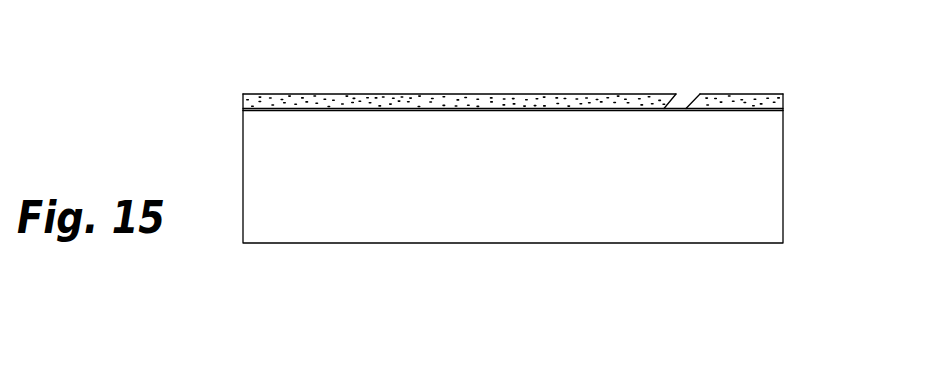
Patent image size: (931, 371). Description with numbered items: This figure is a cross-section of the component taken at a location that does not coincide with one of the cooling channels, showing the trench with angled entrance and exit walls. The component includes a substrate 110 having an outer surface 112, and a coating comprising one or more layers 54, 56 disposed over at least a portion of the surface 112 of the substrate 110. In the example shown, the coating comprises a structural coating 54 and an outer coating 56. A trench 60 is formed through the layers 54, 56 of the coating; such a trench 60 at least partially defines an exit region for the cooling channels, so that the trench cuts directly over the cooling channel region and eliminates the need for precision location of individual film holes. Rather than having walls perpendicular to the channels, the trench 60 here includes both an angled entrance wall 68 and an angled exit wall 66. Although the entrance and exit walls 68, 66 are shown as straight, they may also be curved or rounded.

The substrate 110 is at (763, 187).
The outer surface 112 is at (261, 112).
The structural coating 54 is at (483, 78).
The outer coating 56 is at (280, 102).
The trench 60 is at (721, 65).
The angled entrance wall 68 is at (677, 101).
The angled exit wall 66 is at (700, 100).